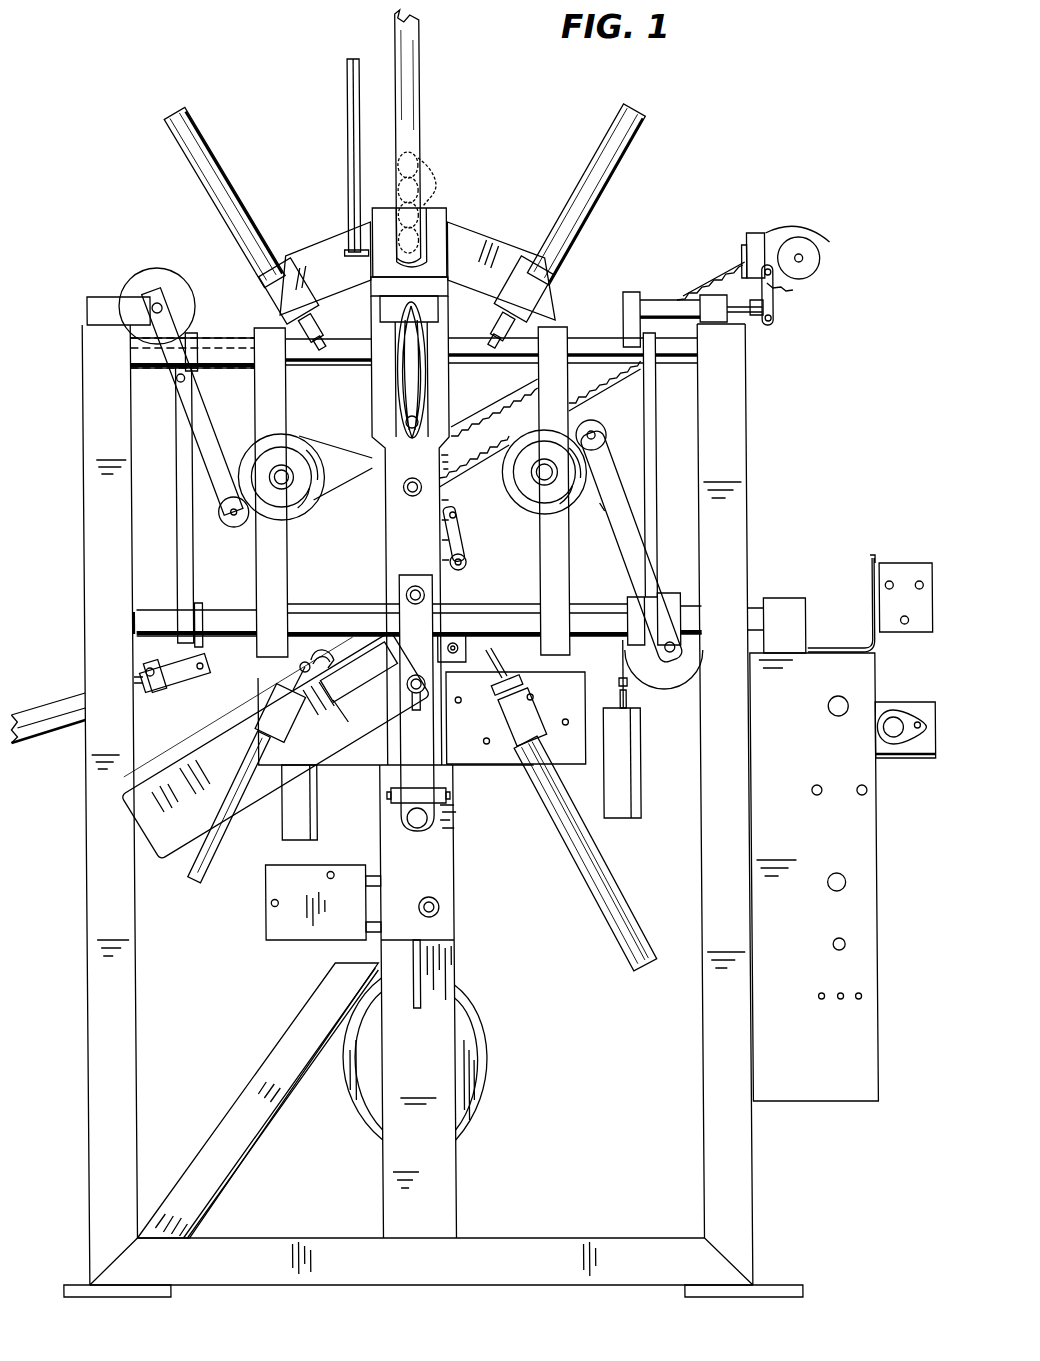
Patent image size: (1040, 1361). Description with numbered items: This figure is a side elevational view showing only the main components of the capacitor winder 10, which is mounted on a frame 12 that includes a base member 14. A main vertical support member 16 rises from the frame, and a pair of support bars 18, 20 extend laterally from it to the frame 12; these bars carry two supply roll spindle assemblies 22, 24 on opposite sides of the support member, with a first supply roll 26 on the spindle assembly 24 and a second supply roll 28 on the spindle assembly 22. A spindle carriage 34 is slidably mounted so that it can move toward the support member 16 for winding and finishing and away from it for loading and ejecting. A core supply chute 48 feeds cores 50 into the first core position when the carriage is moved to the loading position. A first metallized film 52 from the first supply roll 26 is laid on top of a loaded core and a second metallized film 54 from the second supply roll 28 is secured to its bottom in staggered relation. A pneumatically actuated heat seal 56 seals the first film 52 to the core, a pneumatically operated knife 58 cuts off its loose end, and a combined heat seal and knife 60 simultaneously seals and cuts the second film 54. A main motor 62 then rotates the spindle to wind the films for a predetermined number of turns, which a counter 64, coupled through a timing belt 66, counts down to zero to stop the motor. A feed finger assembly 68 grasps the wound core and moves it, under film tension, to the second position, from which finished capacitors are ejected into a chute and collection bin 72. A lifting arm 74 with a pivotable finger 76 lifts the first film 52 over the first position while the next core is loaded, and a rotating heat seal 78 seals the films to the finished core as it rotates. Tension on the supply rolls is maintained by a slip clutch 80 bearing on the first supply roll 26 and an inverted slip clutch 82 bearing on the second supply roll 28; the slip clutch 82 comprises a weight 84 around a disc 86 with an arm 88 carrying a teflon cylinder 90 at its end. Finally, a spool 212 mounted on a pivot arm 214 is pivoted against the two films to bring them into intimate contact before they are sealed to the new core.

The capacitor winder 10 is at (762, 438).
The frame 12 is at (727, 569).
The base member 14 is at (520, 1250).
The main vertical support member 16 is at (428, 1152).
The support bar 18 is at (480, 353).
The support bar 20 is at (320, 612).
The supply roll spindle assembly 22 is at (563, 583).
The supply roll spindle assembly 24 is at (284, 420).
The first supply roll 26 is at (295, 495).
The second supply roll 28 is at (545, 485).
The spindle carriage 34 is at (420, 554).
The core supply chute 48 is at (421, 88).
The core 50 is at (430, 186).
The first metallized film 52 is at (371, 460).
The second metallized film 54 is at (457, 469).
The heat seal 56 is at (318, 329).
The knife 58 is at (504, 331).
The combined heat seal and knife 60 is at (494, 668).
The main motor 62 is at (473, 1080).
The counter 64 is at (802, 245).
The timing belt 66 is at (704, 290).
The feed finger assembly 68 is at (406, 378).
The chute and collection bin 72 is at (194, 821).
The lifting arm 74 is at (290, 668).
The pivotable finger 76 is at (319, 660).
The rotating heat seal 78 is at (170, 680).
The slip clutch 80 is at (190, 397).
The slip clutch 82 is at (620, 528).
The weight 84 is at (637, 760).
The disc 86 is at (662, 678).
The arm 88 is at (612, 505).
The teflon cylinder 90 is at (594, 426).
The spool 212 is at (464, 565).
The pivot arm 214 is at (456, 526).